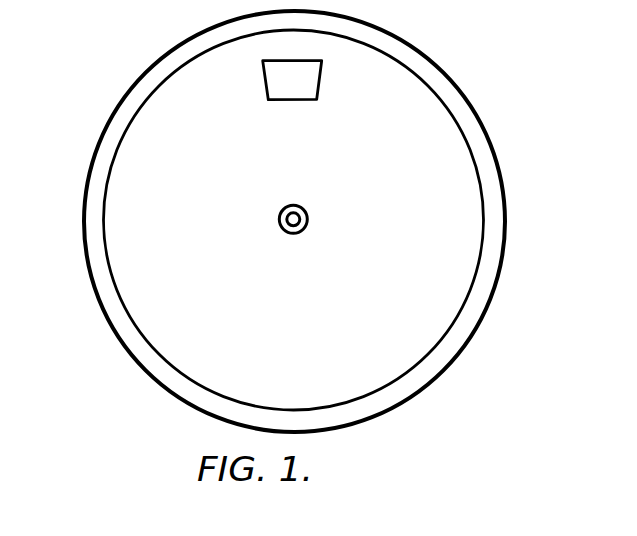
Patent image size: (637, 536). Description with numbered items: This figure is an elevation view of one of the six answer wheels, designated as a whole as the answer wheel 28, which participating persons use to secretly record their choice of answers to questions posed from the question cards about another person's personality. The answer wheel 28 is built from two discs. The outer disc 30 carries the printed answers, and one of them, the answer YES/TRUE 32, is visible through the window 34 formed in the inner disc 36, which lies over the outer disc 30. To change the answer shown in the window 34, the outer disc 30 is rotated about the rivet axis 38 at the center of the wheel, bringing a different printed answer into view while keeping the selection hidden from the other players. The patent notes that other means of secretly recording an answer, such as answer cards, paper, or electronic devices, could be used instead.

The answer wheel 28 is at (274, 220).
The outer disc 30 is at (257, 221).
The YES/TRUE answer 32 is at (282, 100).
The window 34 is at (307, 100).
The inner disc 36 is at (137, 267).
The rivet axis 38 is at (292, 234).